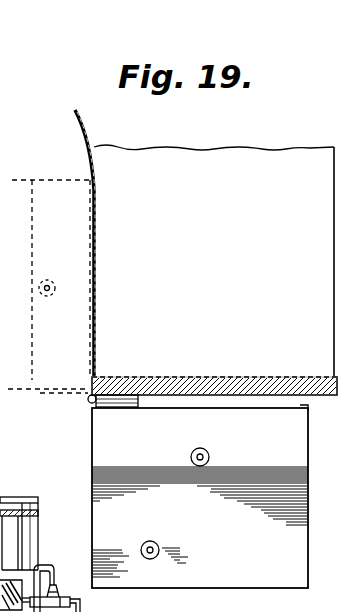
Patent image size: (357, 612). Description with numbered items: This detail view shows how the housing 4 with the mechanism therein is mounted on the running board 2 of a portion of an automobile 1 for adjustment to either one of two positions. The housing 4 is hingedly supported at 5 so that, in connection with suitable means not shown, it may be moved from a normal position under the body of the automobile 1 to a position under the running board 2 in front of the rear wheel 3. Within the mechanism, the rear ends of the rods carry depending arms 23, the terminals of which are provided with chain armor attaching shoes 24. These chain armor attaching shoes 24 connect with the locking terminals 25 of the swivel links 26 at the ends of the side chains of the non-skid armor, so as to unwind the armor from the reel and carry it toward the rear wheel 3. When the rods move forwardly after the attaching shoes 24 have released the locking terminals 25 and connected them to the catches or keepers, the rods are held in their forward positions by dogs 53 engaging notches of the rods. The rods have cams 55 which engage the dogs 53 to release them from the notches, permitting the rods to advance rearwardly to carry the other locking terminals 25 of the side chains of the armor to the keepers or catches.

The portion of an automobile 1 is at (87, 126).
The running board 2 is at (320, 396).
The rear wheel 3 is at (3, 157).
The housing 4 is at (308, 495).
The hinge support 5 is at (86, 400).
The depending arm 23 is at (54, 576).
The chain armor attaching shoe 24 is at (56, 592).
The locking terminal 25 is at (68, 599).
The swivel link 26 is at (7, 220).
The dog 53 is at (28, 512).
The cam 55 is at (30, 556).